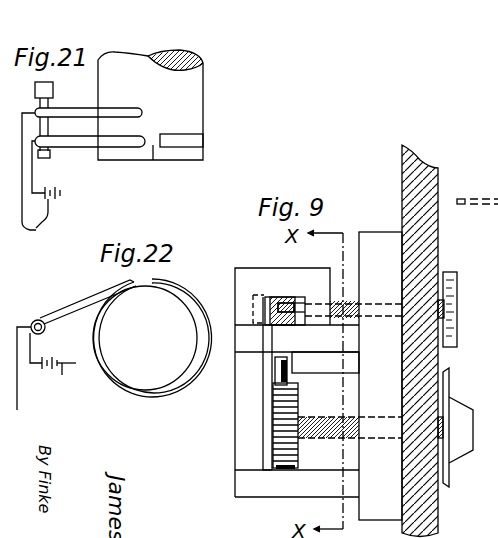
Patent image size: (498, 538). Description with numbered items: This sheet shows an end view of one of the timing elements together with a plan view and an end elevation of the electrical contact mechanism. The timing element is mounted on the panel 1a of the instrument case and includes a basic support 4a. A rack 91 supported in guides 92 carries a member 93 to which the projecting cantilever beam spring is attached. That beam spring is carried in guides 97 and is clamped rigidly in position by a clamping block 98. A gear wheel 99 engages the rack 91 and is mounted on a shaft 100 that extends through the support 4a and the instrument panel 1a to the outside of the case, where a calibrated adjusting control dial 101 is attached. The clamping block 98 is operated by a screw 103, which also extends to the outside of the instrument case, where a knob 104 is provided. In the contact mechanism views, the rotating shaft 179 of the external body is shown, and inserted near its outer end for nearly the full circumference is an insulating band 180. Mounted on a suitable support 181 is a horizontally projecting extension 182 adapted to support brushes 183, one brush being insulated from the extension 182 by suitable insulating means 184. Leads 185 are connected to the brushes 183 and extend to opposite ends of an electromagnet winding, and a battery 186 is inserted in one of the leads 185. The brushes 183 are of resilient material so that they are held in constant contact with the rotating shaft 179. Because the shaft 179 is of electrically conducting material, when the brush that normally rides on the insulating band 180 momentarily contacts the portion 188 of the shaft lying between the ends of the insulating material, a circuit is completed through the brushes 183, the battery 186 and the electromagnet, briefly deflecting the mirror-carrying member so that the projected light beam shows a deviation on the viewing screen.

In FIG. 21, the rotating shaft 179 is at (195, 91).
In FIG. 22, the rotating shaft 179 is at (146, 372).
In FIG. 21, the insulating band 180 is at (193, 139).
In FIG. 22, the insulating band 180 is at (166, 293).
In FIG. 21, the support 181 is at (53, 84).
In FIG. 21, the horizontally projecting extension 182 is at (44, 158).
In FIG. 22, the horizontally projecting extension 182 is at (45, 332).
In FIG. 21, the brushes 183 is at (63, 115).
In FIG. 21, the insulating means 184 is at (50, 148).
In FIG. 21, the leads 185 is at (30, 241).
In FIG. 22, the leads 185 is at (19, 404).
In FIG. 21, the battery 186 is at (62, 201).
In FIG. 21, the shaft portion 188 is at (153, 160).
In FIG. 9, the guides 97 is at (240, 300).
In FIG. 9, the clamping block 98 is at (292, 326).
In FIG. 9, the screw 103 is at (390, 310).
In FIG. 9, the knob 104 is at (458, 288).
In FIG. 9, the guides 92 is at (325, 363).
In FIG. 9, the member 93 is at (263, 401).
In FIG. 9, the rack 91 is at (289, 378).
In FIG. 9, the gear wheel 99 is at (290, 446).
In FIG. 9, the shaft 100 is at (375, 413).
In FIG. 9, the calibrated adjusting control dial 101 is at (460, 408).
In FIG. 9, the basic support 4a is at (380, 376).
In FIG. 9, the panel 1a is at (428, 514).